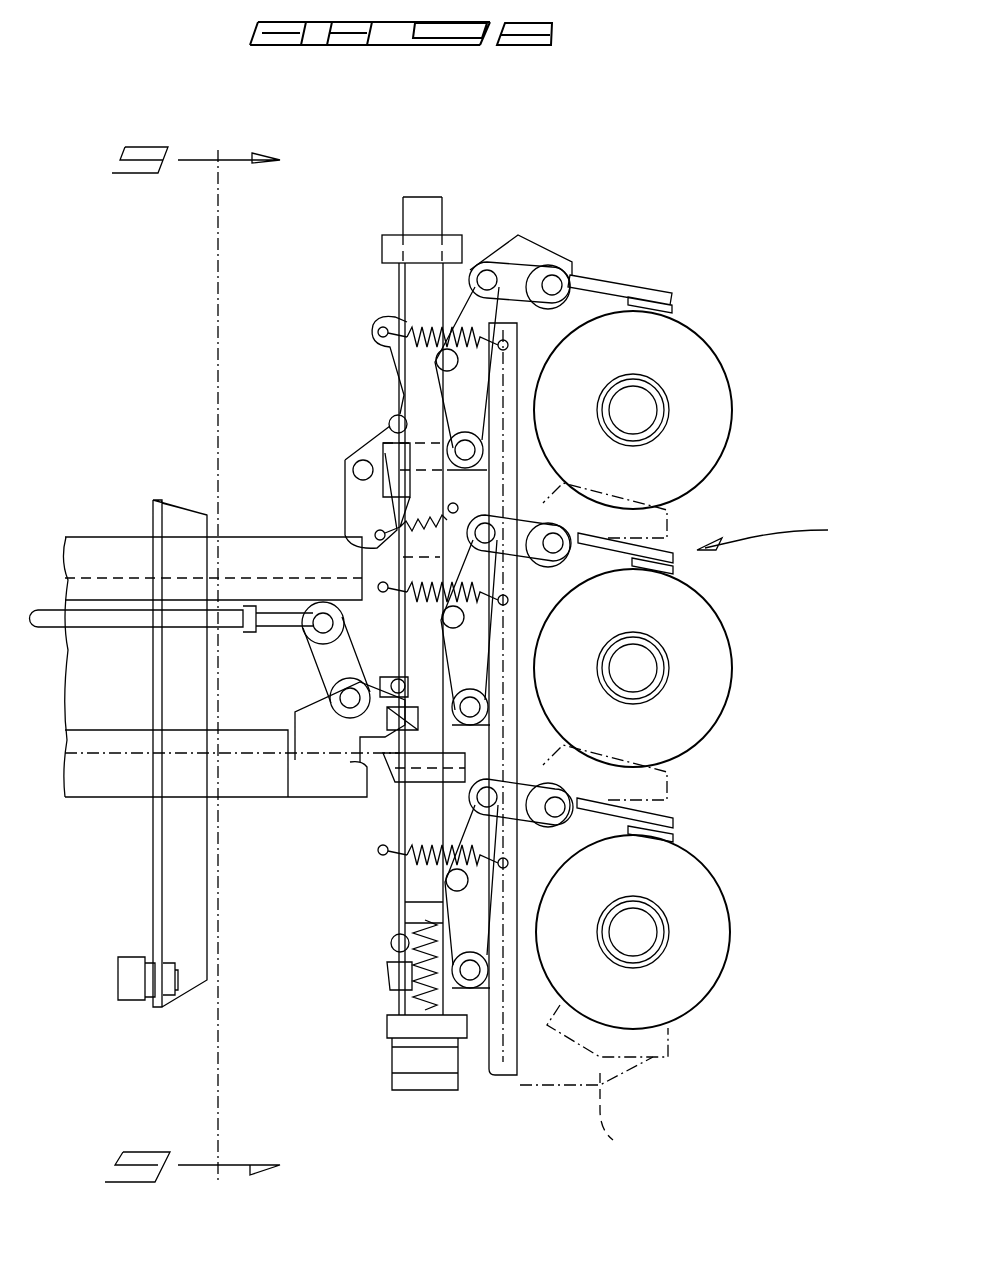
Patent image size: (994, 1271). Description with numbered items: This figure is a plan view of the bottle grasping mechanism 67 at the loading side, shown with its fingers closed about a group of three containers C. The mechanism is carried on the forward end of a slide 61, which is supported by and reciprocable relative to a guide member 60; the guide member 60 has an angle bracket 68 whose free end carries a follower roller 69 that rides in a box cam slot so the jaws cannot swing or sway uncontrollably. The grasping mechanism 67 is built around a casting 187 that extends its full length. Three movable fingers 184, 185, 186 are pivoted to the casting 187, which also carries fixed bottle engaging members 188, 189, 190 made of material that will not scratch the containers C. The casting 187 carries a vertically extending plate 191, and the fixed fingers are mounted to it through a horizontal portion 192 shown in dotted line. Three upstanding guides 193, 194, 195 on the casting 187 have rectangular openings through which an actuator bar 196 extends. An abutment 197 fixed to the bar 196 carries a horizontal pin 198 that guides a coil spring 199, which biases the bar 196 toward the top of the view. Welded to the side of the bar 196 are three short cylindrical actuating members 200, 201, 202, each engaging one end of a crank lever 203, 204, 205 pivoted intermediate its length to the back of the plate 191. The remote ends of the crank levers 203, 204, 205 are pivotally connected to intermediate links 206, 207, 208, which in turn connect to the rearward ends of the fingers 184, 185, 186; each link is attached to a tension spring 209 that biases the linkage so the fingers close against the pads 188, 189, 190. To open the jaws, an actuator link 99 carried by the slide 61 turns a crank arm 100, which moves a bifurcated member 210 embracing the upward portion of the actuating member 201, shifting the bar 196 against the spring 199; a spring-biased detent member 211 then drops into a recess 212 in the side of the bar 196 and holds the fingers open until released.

The guide member 60 is at (107, 555).
The slide 61 is at (118, 688).
The bottle grasping jaw mechanism 67 is at (779, 534).
The angle bracket 68 is at (172, 857).
The follower roller 69 is at (128, 970).
The actuator link 99 is at (45, 608).
The crank arm 100 is at (313, 653).
The movable finger 184 is at (663, 295).
The movable finger 185 is at (673, 567).
The movable finger 186 is at (673, 835).
The casting 187 is at (513, 240).
The fixed bottle engaging member 188 is at (657, 522).
The fixed bottle engaging member 189 is at (693, 780).
The fixed bottle engaging member 190 is at (660, 1047).
The vertically extending plate 191 is at (507, 1060).
The horizontal portion 192 is at (593, 1110).
The upstanding guide 193 is at (390, 248).
The upstanding guide 194 is at (402, 787).
The upstanding guide 195 is at (398, 1023).
The actuator bar 196 is at (415, 383).
The abutment 197 is at (420, 907).
The pin 198 is at (420, 973).
The coil spring 199 is at (420, 998).
The actuating member 200 is at (390, 420).
The actuating member 201 is at (400, 683).
The actuating member 202 is at (392, 943).
The crank lever 203 is at (463, 403).
The crank lever 204 is at (463, 660).
The crank lever 205 is at (460, 928).
The intermediate link 206 is at (470, 310).
The intermediate link 207 is at (470, 570).
The intermediate link 208 is at (480, 828).
The tension spring 209 is at (447, 326).
The bifurcated member 210 is at (330, 722).
The spring-biased detent member 211 is at (372, 526).
The recess 212 is at (410, 497).
The container C is at (717, 390).